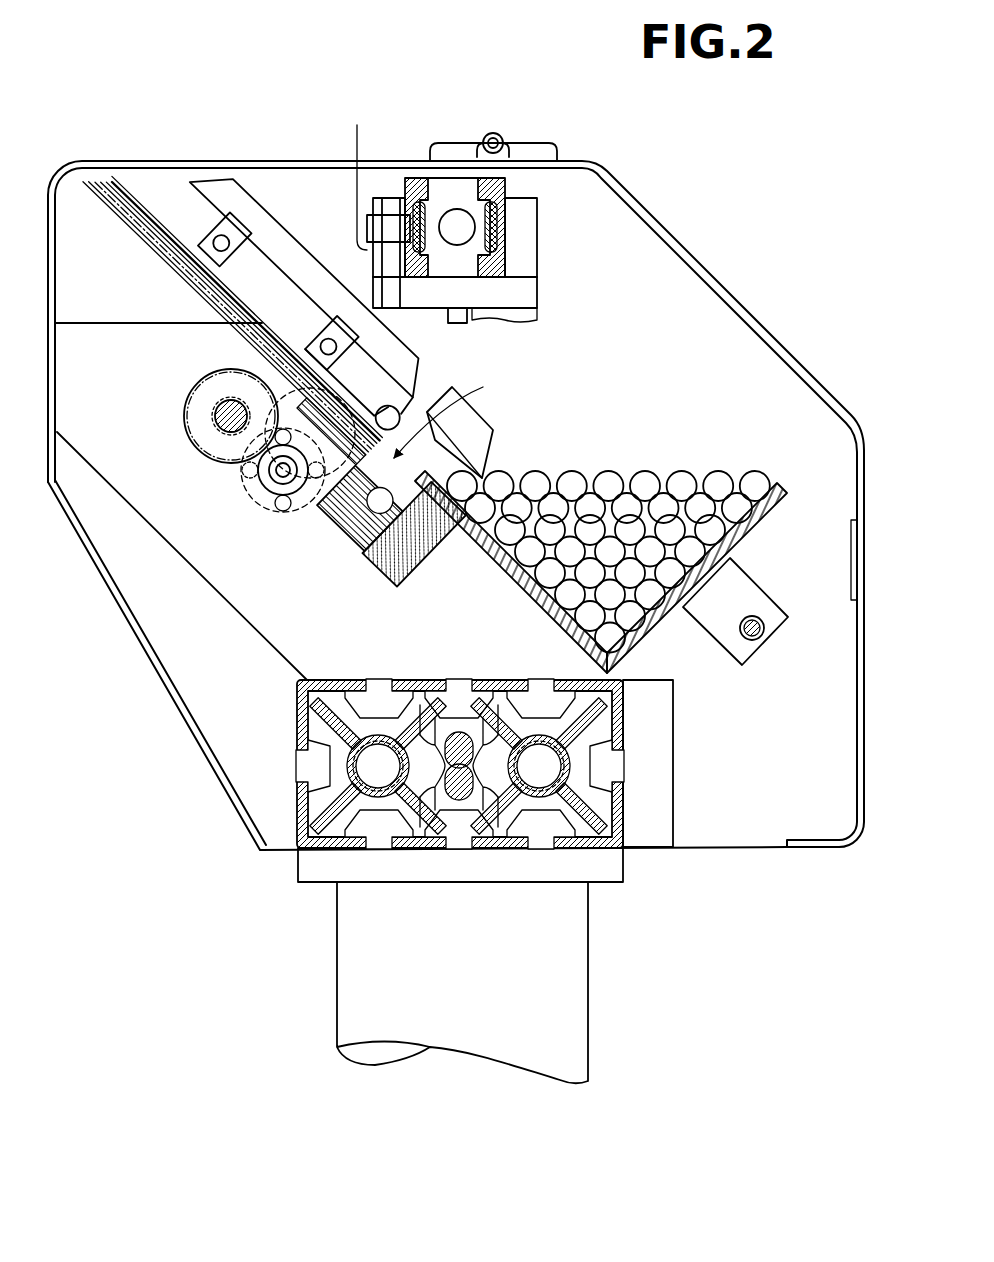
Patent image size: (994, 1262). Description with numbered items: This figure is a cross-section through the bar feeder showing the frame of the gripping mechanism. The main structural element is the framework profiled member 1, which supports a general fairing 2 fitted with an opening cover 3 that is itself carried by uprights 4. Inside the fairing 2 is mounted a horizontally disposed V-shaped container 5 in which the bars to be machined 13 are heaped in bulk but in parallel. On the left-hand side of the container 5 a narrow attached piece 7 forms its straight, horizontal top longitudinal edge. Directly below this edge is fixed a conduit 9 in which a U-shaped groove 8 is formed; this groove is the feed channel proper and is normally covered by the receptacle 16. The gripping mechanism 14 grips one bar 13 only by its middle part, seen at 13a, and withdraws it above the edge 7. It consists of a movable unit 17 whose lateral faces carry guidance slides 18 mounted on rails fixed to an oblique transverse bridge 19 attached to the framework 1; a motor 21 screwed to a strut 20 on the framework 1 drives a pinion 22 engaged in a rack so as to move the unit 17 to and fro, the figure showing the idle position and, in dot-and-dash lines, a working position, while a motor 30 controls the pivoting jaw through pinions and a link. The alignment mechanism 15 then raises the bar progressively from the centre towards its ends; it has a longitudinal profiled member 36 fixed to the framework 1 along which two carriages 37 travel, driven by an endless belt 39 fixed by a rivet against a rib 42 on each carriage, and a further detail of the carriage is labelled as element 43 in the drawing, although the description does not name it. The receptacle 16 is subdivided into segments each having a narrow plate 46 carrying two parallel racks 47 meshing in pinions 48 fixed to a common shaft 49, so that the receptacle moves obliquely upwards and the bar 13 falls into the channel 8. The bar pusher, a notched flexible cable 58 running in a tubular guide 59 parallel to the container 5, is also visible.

The framework profiled member 1 is at (298, 801).
The general fairing 2 is at (186, 717).
The opening cover 3 is at (636, 192).
The uprights 4 is at (348, 943).
The container 5 is at (775, 478).
The narrow attached piece 7 is at (448, 553).
The U-shaped groove 8 is at (403, 573).
The conduit 9 is at (362, 567).
The bars to be machined 13 is at (640, 487).
The middle part of the gripped bar 13a is at (462, 417).
The gripping mechanism 14 is at (314, 239).
The alignment mechanism 15 is at (353, 173).
The receptacle 16 is at (430, 455).
The movable unit 17 is at (252, 272).
The guidance slides 18 is at (113, 186).
The oblique transverse bridge 19 is at (230, 333).
The strut 20 is at (188, 556).
The motor 21 is at (282, 508).
The pinion 22 is at (335, 500).
The motor 30 is at (276, 278).
The longitudinal profiled member 36 is at (415, 278).
The carriages 37 is at (540, 215).
The endless belt 39 is at (408, 196).
The rib 42 is at (500, 230).
The bearing cap 43 is at (480, 316).
The narrow plate 46 is at (430, 468).
The racks 47 is at (255, 378).
The pinions 48 is at (185, 410).
The shaft 49 is at (222, 430).
The flexible cable 58 is at (757, 635).
The tubular guide 59 is at (767, 600).